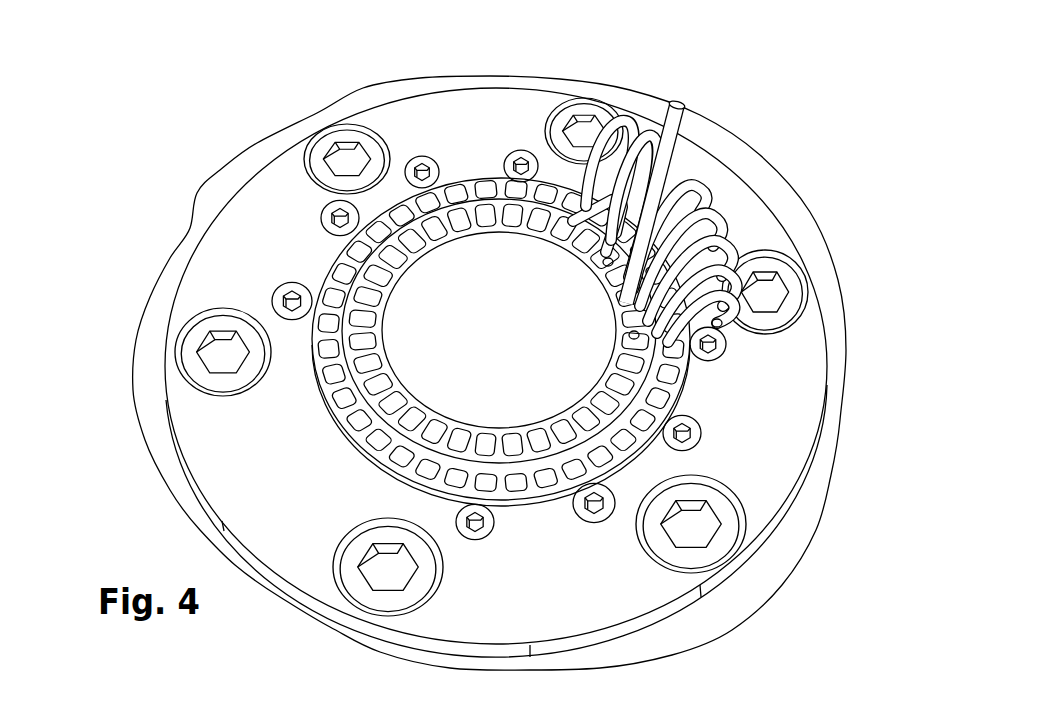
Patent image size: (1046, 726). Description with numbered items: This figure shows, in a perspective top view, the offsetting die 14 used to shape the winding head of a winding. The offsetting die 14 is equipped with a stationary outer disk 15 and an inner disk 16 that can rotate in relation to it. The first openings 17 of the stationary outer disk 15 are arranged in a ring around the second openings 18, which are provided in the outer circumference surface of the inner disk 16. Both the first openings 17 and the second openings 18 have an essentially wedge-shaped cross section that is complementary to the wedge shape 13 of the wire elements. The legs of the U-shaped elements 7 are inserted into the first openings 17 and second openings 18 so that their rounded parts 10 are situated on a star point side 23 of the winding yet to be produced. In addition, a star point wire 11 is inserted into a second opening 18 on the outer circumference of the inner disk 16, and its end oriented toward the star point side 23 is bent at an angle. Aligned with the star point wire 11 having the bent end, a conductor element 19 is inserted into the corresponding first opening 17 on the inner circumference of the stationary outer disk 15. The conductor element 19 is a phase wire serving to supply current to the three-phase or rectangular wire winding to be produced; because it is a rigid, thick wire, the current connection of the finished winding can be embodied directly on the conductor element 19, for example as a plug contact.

The U-shaped element 7 is at (728, 318).
The rounded part 10 is at (702, 194).
The star point wire 11 is at (573, 221).
The wedge shape 13 is at (608, 266).
The offsetting die 14 is at (288, 107).
The stationary outer disk 15 is at (257, 232).
The inner disk 16 is at (517, 400).
The first openings 17 is at (365, 432).
The second openings 18 is at (457, 437).
The conductor element 19 is at (678, 122).
The star point side 23 is at (697, 170).